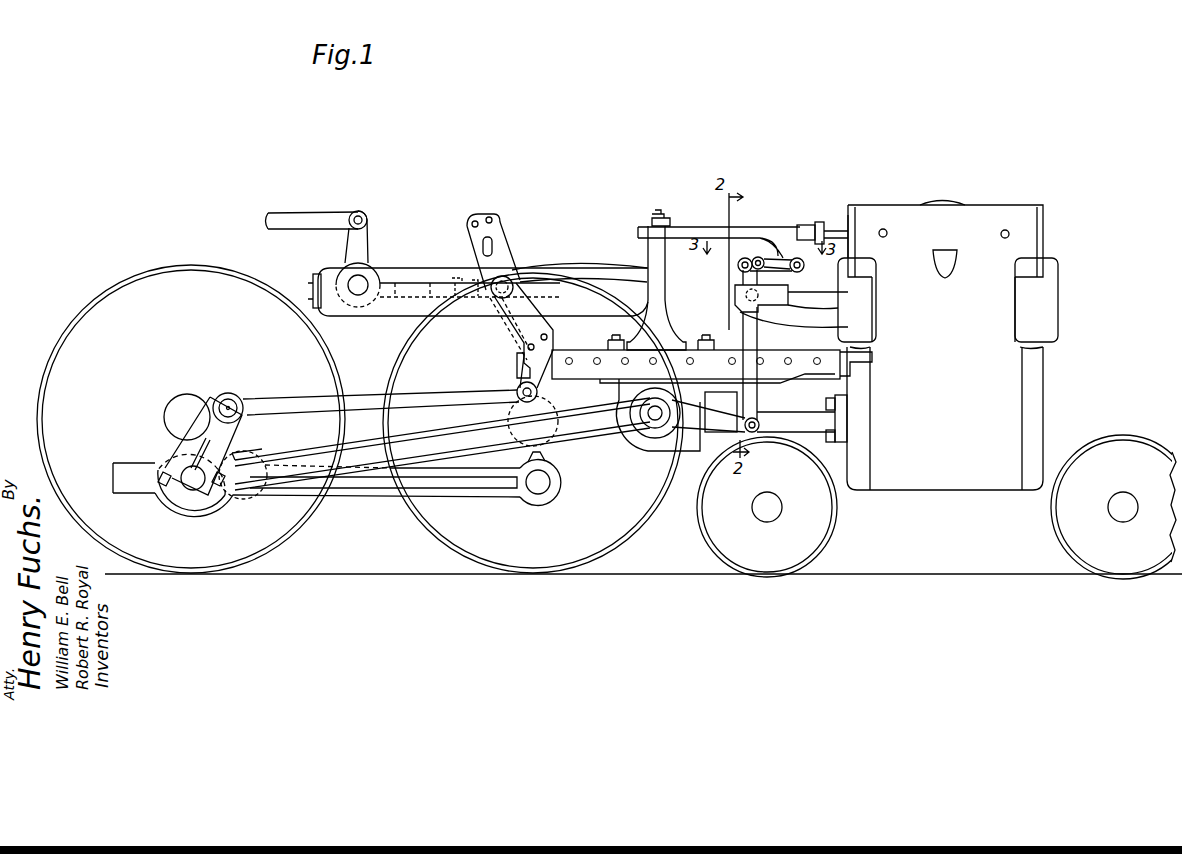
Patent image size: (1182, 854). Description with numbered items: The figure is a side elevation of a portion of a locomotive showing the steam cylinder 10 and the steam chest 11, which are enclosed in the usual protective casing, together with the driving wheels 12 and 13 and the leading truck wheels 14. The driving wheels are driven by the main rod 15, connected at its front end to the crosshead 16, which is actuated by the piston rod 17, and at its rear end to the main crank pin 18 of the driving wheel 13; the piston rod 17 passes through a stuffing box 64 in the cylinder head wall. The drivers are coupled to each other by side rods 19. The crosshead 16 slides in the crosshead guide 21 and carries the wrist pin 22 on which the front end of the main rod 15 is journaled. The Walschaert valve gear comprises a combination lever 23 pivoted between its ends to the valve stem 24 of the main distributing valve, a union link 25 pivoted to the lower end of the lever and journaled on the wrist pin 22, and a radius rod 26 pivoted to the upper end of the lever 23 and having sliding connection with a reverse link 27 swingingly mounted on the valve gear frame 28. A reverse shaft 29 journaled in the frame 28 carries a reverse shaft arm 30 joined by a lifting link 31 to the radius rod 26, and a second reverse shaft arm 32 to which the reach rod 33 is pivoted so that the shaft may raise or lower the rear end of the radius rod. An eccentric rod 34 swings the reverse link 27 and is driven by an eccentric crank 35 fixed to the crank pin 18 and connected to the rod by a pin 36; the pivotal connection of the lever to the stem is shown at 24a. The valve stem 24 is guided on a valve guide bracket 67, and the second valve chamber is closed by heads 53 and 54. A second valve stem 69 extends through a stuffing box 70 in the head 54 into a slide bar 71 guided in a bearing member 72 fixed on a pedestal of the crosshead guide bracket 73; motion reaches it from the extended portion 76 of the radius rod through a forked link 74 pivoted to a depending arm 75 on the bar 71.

The steam cylinder 10 is at (1043, 406).
The steam chest 11 is at (1052, 290).
The driving wheel 12 is at (628, 530).
The driving wheel 13 is at (286, 530).
The leading truck wheel 14 is at (820, 540).
The main rod 15 is at (425, 440).
The crosshead 16 is at (668, 444).
The piston rod 17 is at (816, 420).
The main crank pin 18 is at (191, 482).
The side rod 19 is at (130, 495).
The crosshead guide 21 is at (612, 360).
The wrist pin 22 is at (640, 437).
The combination lever 23 is at (758, 335).
The valve stem 24 is at (808, 292).
The pivot pin 24a is at (740, 295).
The union link 25 is at (710, 430).
The radius rod 26 is at (604, 268).
The reverse link 27 is at (505, 246).
The valve gear frame 28 is at (480, 310).
The reverse shaft 29 is at (364, 282).
The reverse shaft arm 30 is at (408, 282).
The lifting link 31 is at (452, 280).
The second reverse shaft arm 32 is at (369, 231).
The reach rod 33 is at (268, 214).
The eccentric rod 34 is at (356, 400).
The eccentric crank 35 is at (236, 438).
The pin 36 is at (230, 393).
The head 53 is at (1043, 206).
The head 54 is at (846, 205).
The stuffing box 64 is at (840, 442).
The valve guide bracket 67 is at (804, 322).
The valve stem 69 is at (804, 225).
The stuffing box 70 is at (821, 224).
The slide bar 71 is at (749, 236).
The bearing member 72 is at (652, 216).
The crosshead guide bracket 73 is at (637, 328).
The link 74 is at (767, 271).
The depending arm 75 is at (778, 259).
The extended portion 76 is at (760, 257).